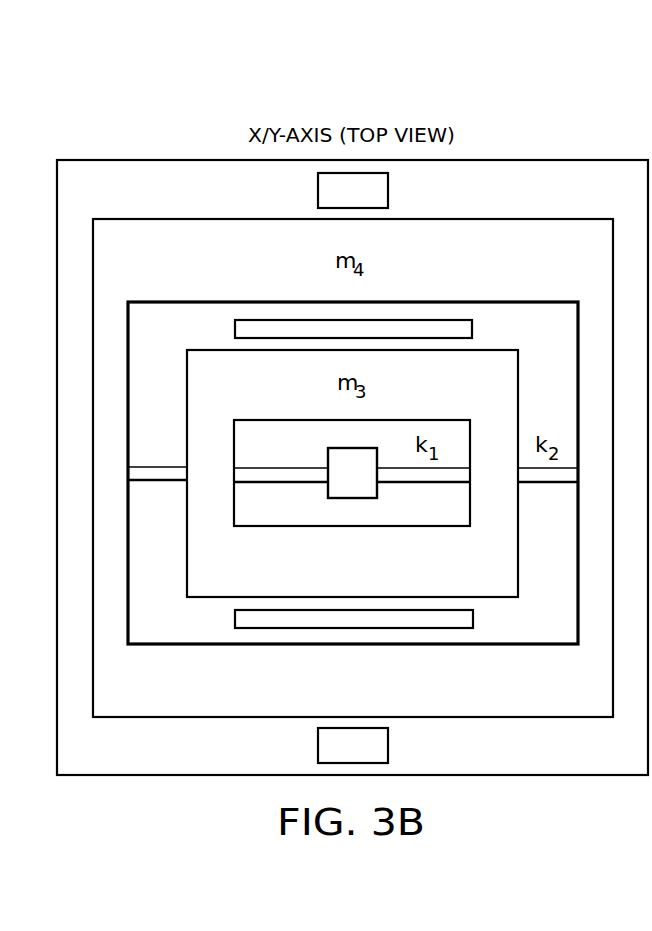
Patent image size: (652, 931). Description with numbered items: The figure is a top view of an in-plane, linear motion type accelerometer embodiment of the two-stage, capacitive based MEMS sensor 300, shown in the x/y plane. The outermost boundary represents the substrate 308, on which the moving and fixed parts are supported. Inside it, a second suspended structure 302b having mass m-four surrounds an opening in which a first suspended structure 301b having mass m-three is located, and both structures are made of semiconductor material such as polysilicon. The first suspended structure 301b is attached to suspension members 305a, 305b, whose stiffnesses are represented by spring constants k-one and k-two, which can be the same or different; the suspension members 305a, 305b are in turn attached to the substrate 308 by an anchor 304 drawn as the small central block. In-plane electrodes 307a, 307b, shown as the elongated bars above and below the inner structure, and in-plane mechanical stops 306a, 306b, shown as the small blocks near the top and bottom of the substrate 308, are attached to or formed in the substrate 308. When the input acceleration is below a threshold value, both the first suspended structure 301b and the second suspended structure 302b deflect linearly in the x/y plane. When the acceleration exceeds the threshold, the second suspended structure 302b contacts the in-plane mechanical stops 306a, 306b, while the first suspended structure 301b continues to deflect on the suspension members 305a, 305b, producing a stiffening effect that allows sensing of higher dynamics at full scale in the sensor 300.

The two-stage MEMS sensor 300 is at (212, 101).
The substrate 308 is at (566, 152).
The second suspended structure 302b is at (583, 272).
The first suspended structure 301b is at (490, 403).
The anchor 304 is at (328, 459).
The suspension member 305a is at (407, 483).
The suspension member 305b is at (550, 483).
The in-plane mechanical stop 306a is at (388, 190).
The in-plane mechanical stop 306b is at (388, 745).
The in-plane electrode 307a is at (235, 329).
The in-plane electrode 307b is at (235, 618).